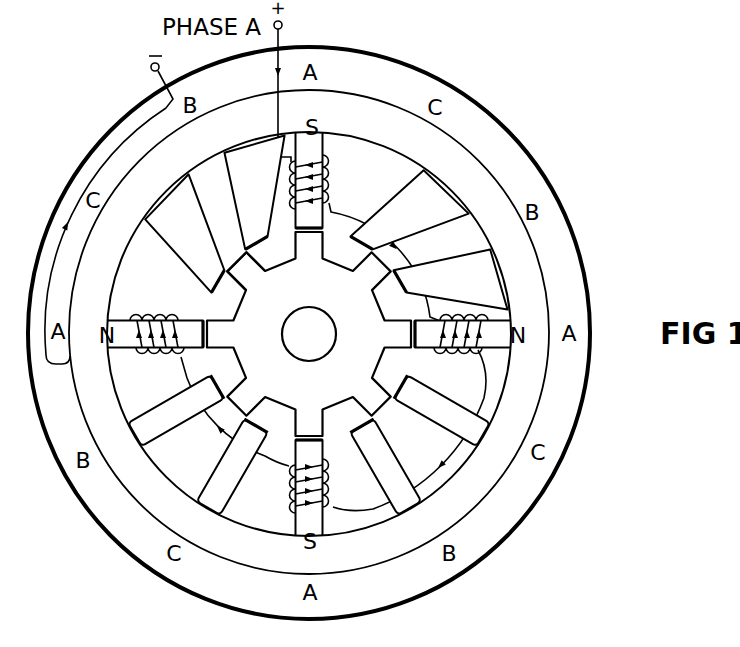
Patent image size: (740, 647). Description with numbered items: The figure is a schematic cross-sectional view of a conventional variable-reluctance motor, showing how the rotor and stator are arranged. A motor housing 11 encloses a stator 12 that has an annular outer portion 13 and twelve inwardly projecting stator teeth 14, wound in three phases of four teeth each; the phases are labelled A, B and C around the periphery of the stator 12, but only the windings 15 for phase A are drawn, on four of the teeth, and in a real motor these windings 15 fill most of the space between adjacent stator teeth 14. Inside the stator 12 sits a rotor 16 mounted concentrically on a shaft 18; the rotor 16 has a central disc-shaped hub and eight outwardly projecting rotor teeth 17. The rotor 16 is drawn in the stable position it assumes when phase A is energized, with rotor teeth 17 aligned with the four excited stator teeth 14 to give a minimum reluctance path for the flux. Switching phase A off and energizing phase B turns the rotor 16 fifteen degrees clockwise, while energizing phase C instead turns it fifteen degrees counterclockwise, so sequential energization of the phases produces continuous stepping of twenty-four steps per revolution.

The motor housing 11 is at (476, 141).
The stator 12 is at (395, 151).
The annular outer portion 13 is at (509, 283).
The stator teeth 14 is at (436, 387).
The windings 15 is at (294, 183).
The rotor 16 is at (295, 298).
The rotor teeth 17 is at (244, 292).
The shaft 18 is at (309, 334).